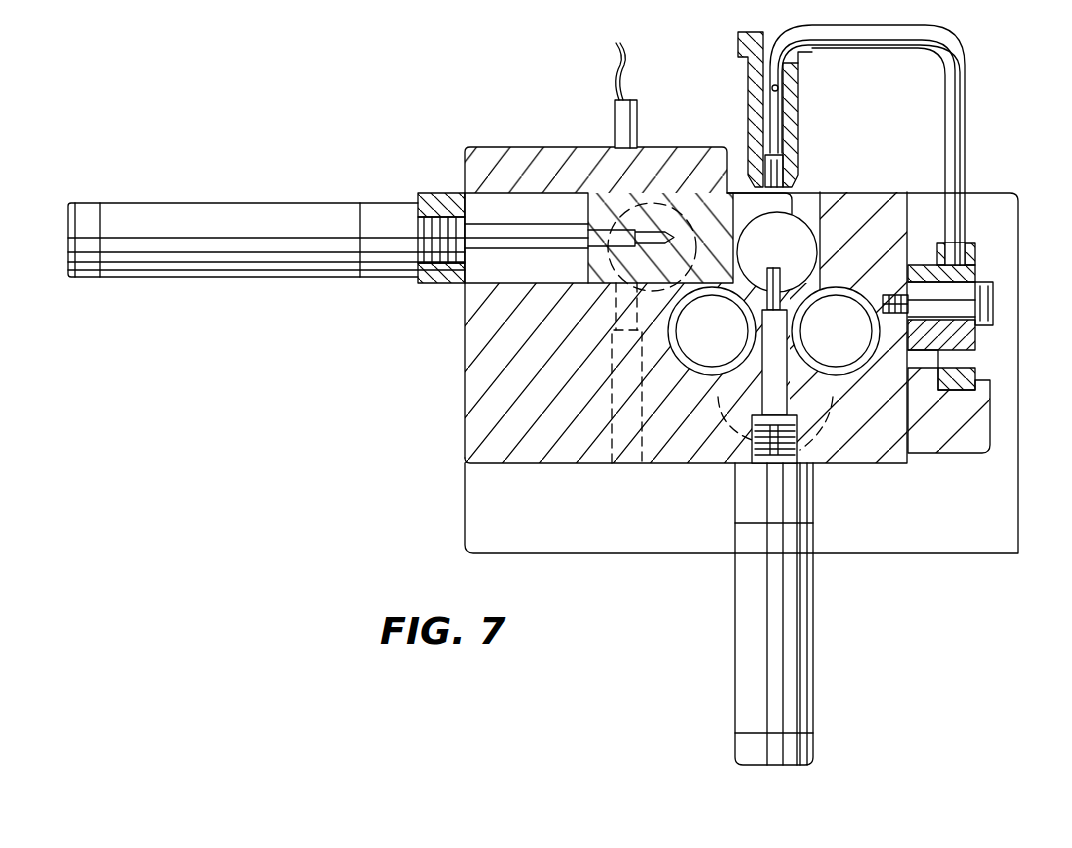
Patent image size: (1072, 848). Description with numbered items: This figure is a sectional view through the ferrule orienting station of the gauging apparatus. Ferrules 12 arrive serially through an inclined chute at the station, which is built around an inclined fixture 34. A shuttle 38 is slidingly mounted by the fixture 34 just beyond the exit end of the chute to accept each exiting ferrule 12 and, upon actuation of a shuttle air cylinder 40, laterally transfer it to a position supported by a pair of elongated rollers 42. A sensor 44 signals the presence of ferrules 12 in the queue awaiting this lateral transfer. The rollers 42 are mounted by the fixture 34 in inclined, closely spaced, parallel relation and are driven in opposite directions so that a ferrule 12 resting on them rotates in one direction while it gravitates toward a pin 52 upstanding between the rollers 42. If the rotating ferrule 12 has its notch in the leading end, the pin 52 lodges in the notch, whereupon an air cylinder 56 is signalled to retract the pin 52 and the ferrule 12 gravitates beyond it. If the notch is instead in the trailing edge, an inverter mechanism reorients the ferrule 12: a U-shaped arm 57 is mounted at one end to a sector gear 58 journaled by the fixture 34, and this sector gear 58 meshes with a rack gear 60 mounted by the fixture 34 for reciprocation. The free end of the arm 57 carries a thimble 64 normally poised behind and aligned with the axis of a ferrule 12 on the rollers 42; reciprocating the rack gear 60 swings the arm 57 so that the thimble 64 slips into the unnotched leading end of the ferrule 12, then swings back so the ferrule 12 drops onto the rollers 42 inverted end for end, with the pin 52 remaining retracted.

The ferrule 12 is at (812, 192).
The fixture 34 is at (481, 430).
The shuttle 38 is at (588, 268).
The shuttle air cylinder 40 is at (293, 208).
The elongated rollers 42 is at (750, 290).
The sensor 44 is at (620, 115).
The pin 52 is at (780, 298).
The air cylinder 56 is at (788, 580).
The U-shaped arm 57 is at (960, 128).
The sector gear 58 is at (962, 345).
The rack gear 60 is at (973, 368).
The thimble 64 is at (797, 135).